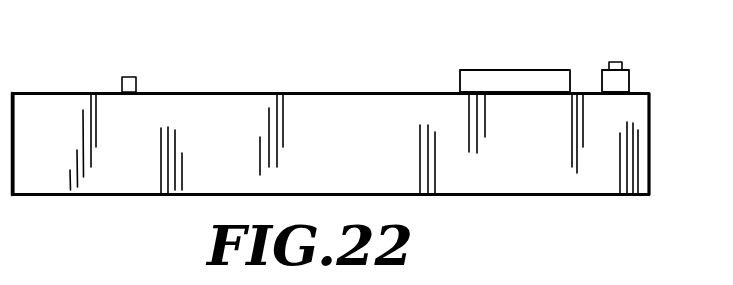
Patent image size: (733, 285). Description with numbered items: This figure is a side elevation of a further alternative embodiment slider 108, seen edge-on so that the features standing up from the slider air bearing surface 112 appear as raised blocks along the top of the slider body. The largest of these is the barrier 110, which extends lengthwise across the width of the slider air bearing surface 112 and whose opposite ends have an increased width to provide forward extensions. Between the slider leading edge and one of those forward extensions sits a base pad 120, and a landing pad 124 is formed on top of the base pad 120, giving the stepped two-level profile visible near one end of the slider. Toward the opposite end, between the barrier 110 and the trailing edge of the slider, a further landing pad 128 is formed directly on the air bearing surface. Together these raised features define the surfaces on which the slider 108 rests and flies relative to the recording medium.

The slider 108 is at (323, 92).
The barrier 110 is at (515, 78).
The slider air bearing surface 112 is at (62, 92).
The base pad 120 is at (622, 83).
The landing pad 124 is at (612, 60).
The landing pad 128 is at (130, 78).